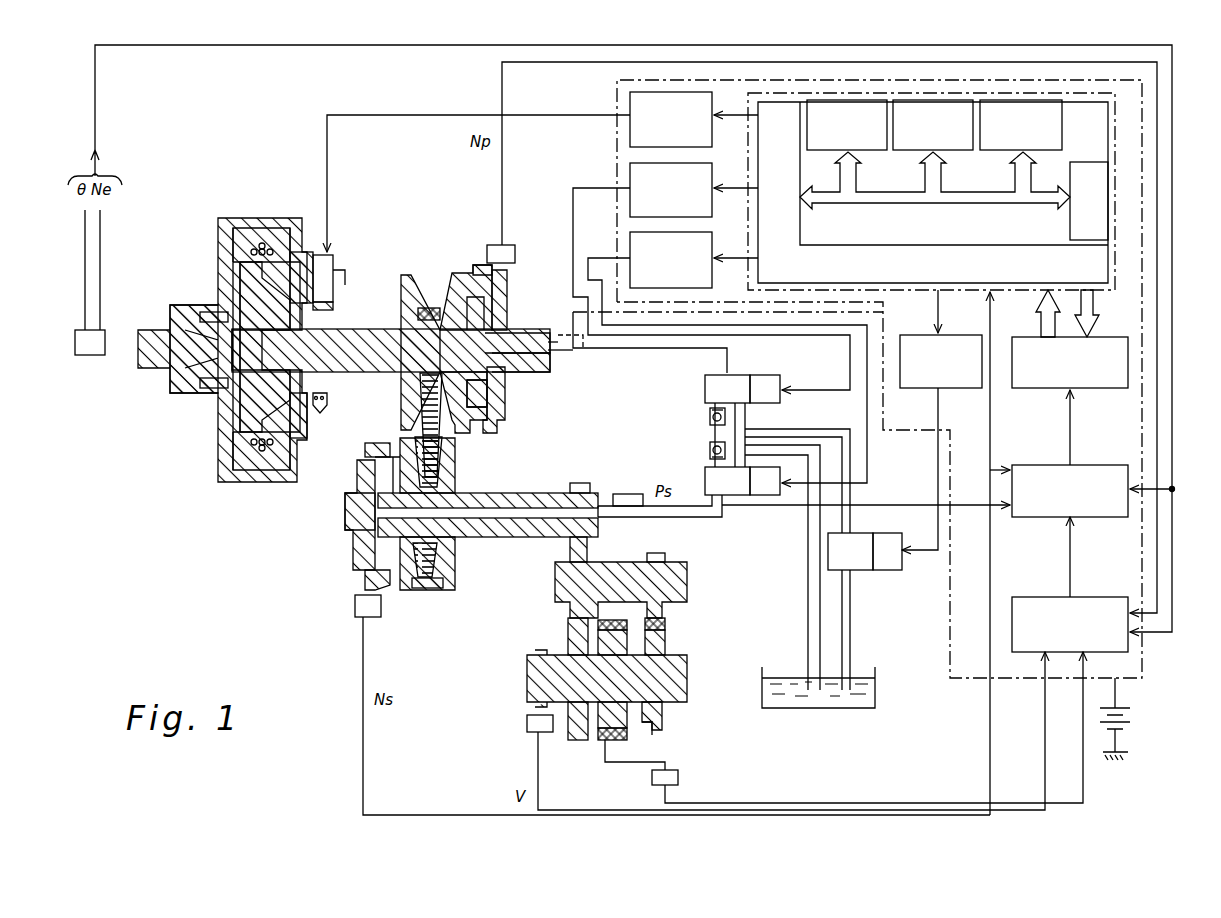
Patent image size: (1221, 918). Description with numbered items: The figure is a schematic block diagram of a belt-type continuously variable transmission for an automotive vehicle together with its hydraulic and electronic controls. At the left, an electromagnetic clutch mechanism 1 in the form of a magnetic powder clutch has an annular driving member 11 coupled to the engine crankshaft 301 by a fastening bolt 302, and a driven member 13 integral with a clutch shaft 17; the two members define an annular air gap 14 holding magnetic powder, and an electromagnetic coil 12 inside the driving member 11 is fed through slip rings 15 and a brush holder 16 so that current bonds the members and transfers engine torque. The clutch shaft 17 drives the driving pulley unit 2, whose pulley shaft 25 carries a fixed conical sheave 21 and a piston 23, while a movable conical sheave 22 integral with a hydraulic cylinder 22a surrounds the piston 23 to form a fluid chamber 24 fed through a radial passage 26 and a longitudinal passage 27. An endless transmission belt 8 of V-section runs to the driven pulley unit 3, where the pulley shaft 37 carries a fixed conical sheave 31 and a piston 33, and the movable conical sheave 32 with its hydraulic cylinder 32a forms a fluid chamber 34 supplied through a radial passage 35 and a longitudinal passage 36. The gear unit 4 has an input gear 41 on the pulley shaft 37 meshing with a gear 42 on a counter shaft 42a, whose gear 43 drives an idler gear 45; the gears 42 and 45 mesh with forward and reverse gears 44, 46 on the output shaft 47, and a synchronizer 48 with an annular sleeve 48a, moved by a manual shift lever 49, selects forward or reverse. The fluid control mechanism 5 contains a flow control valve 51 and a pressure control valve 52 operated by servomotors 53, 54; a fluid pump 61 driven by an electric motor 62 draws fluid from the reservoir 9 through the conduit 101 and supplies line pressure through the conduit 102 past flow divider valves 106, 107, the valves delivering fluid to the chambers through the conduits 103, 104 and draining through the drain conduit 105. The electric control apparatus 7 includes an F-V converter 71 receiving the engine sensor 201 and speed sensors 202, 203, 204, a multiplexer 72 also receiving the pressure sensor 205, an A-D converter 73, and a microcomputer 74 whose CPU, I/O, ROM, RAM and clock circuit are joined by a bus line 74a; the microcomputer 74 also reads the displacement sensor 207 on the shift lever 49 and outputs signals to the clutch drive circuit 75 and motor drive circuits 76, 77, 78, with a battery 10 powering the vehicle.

The electromagnetic clutch mechanism 1 is at (262, 215).
The driving pulley unit 2 is at (437, 295).
The driven pulley unit 3 is at (340, 547).
The gear unit 4 is at (546, 630).
The electrically operated fluid control mechanism 5 is at (688, 432).
The electric control apparatus 7 is at (614, 152).
The endless transmission belt 8 is at (428, 592).
The reservoir 9 is at (825, 708).
The battery 10 is at (1132, 713).
The driving member 11 is at (228, 462).
The electromagnetic coil 12 is at (262, 452).
The driven member 13 is at (255, 277).
The annular air gap 14 is at (278, 460).
The slip rings 15 is at (312, 415).
The brush holder 16 is at (330, 268).
The clutch shaft 17 is at (350, 330).
The conical sheave 21 is at (398, 293).
The conical sheave 22 is at (458, 290).
The hydraulic cylinder 22a is at (478, 268).
The piston 23 is at (508, 298).
The fluid chamber 24 is at (480, 400).
The pulley shaft 25 is at (535, 373).
The radial passage 26 is at (490, 340).
The longitudinal passage 27 is at (548, 345).
The conical sheave 31 is at (445, 570).
The conical sheave 32 is at (405, 598).
The hydraulic cylinder 32a is at (368, 449).
The piston 33 is at (360, 477).
The fluid chamber 34 is at (392, 455).
The radial passage 35 is at (345, 516).
The longitudinal passage 36 is at (486, 497).
The pulley shaft 37 is at (505, 538).
The input gear 41 is at (572, 486).
The gear 42 is at (568, 556).
The counter shaft 42a is at (620, 572).
The gear 43 is at (665, 556).
The forward gear 44 is at (572, 722).
The idler gear 45 is at (666, 623).
The reverse gear 46 is at (666, 645).
The output shaft 47 is at (530, 682).
The synchronizer 48 is at (632, 742).
The annular sleeve 48a is at (605, 742).
The manual shift lever 49 is at (632, 768).
The flow control valve 51 is at (727, 389).
The pressure control valve 52 is at (727, 481).
The servomotor 53 is at (765, 389).
The servomotor 54 is at (765, 481).
The fluid pump 61 is at (850, 551).
The electric motor 62 is at (887, 551).
The F-V converter 71 is at (1070, 624).
The multiplexer 72 is at (1070, 491).
The A-D converter 73 is at (1070, 362).
The microcomputer 74 is at (1108, 288).
The bus line 74a is at (892, 200).
The clutch drive circuit 75 is at (694, 119).
The motor drive circuit 76 is at (694, 190).
The motor drive circuit 77 is at (694, 260).
The motor drive circuit 78 is at (941, 361).
The conduit 101 is at (851, 655).
The conduit 102 is at (776, 446).
The conduit 103 is at (628, 352).
The conduit 104 is at (722, 518).
The drain conduit 105 is at (810, 596).
The flow divider valve 106 is at (710, 414).
The flow divider valve 107 is at (710, 452).
The engine sensor 201 is at (88, 355).
The speed sensor 202 is at (527, 726).
The speed sensor 203 is at (516, 250).
The speed sensor 204 is at (355, 614).
The pressure sensor 205 is at (628, 494).
The displacement sensor 207 is at (678, 775).
The crankshaft 301 is at (150, 328).
The fastening bolt 302 is at (208, 390).